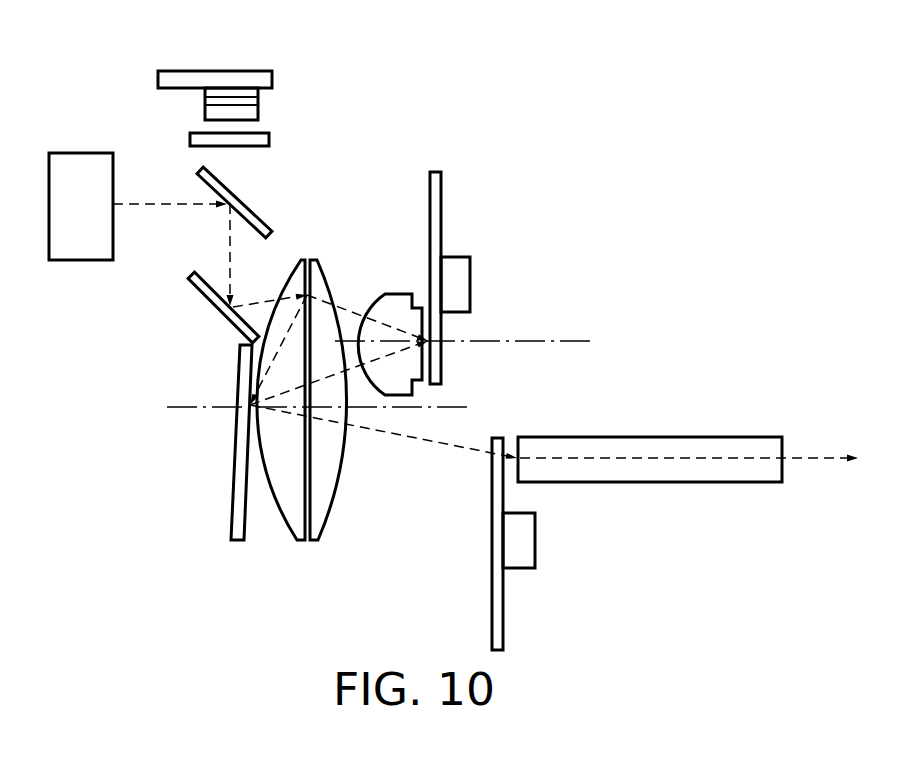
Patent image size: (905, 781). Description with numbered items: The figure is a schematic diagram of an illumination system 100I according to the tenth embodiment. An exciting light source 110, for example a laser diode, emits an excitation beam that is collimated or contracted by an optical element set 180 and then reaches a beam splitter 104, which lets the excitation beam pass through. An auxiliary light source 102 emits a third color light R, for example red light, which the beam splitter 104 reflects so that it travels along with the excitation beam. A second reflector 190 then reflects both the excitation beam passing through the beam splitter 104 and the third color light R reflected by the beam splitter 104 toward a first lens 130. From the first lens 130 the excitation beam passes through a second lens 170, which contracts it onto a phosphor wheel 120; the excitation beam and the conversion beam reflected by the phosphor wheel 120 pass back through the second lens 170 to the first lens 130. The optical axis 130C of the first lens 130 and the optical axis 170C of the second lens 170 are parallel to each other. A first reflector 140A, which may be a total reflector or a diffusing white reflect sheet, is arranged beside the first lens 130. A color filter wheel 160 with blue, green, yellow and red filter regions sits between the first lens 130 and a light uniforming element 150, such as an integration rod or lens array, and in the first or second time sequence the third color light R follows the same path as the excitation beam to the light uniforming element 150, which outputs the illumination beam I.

The illumination system 100I is at (85, 67).
The auxiliary light source 102 is at (80, 160).
The third color light R is at (153, 203).
The beam splitter 104 is at (262, 222).
The exciting light source 110 is at (272, 80).
The optical element set 180 is at (269, 140).
The second reflector 190 is at (208, 298).
The partially reflective plate 140A is at (234, 518).
The first lens 130 is at (302, 545).
The second lens 170 is at (394, 296).
The phosphor wheel 120 is at (437, 206).
The optical axis of the second lens 170C is at (567, 338).
The optical axis of the first lens 130C is at (455, 405).
The light uniforming element 150 is at (655, 440).
The color filter wheel 160 is at (494, 601).
The illumination beam I is at (816, 455).